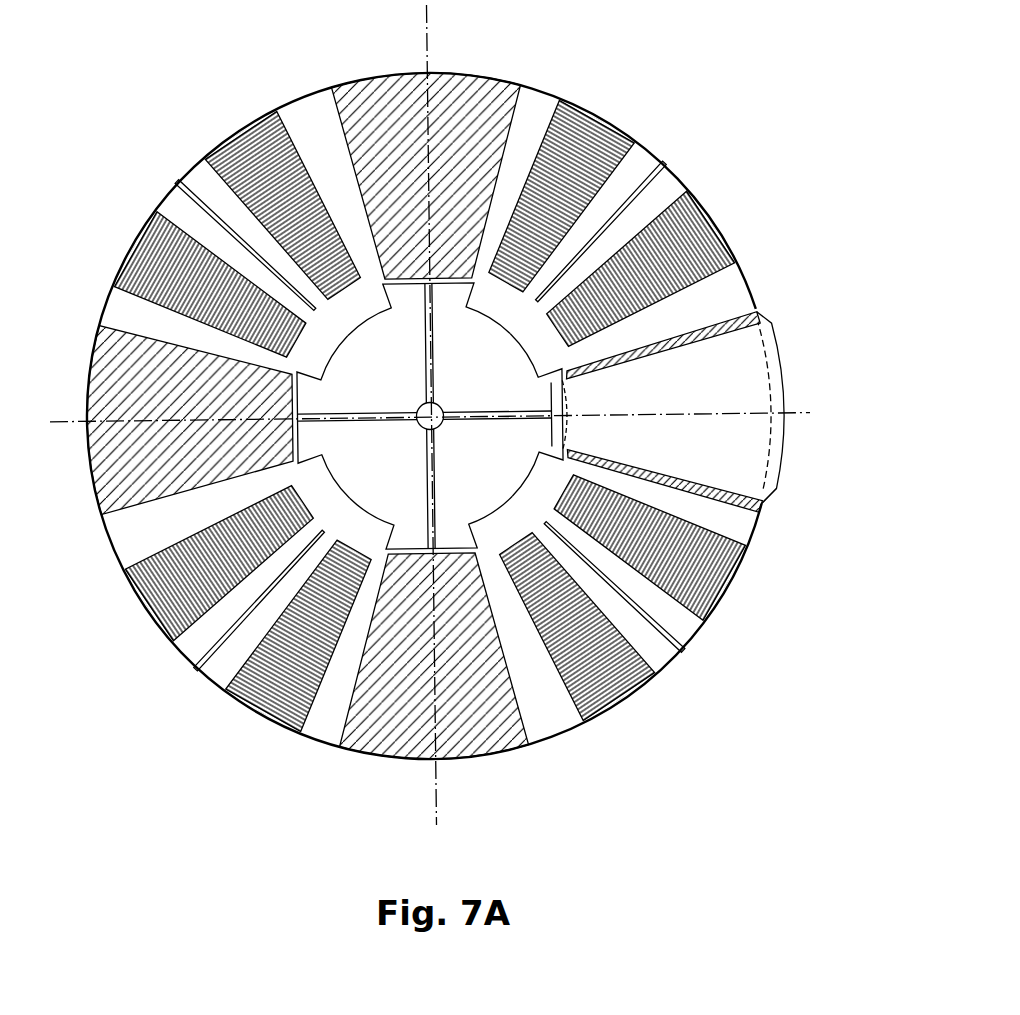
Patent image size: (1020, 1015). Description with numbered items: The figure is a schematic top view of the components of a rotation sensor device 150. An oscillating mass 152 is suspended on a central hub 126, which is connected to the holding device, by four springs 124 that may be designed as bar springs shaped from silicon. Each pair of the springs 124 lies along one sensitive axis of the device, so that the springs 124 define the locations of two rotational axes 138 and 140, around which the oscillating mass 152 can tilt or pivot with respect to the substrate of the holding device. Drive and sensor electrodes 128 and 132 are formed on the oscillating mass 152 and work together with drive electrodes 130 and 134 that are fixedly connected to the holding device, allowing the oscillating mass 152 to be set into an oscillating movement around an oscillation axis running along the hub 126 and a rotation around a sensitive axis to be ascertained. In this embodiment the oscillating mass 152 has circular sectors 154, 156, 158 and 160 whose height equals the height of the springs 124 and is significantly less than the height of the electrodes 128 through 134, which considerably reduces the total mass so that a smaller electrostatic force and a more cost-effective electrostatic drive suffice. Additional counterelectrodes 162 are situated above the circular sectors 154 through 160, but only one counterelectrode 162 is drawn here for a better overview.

The springs 124 is at (435, 460).
The hub 126 is at (421, 428).
The drive and sensor electrodes 128 is at (577, 104).
The drive electrodes 130 is at (628, 132).
The drive and sensor electrodes 132 is at (282, 112).
The drive electrodes 134 is at (236, 133).
The rotational axis 138 is at (803, 424).
The rotational axis 140 is at (440, 796).
The rotation sensor device 150 is at (736, 700).
The oscillating mass 152 is at (786, 520).
The circular sector 154 is at (672, 340).
The circular sector 156 is at (449, 679).
The circular sector 158 is at (168, 477).
The circular sector 160 is at (371, 185).
The counterelectrode 162 is at (787, 375).